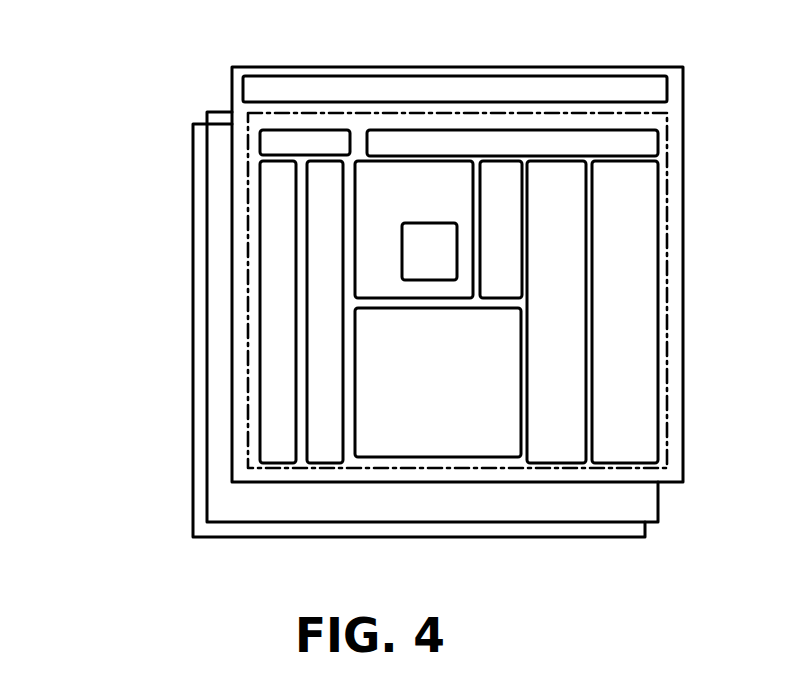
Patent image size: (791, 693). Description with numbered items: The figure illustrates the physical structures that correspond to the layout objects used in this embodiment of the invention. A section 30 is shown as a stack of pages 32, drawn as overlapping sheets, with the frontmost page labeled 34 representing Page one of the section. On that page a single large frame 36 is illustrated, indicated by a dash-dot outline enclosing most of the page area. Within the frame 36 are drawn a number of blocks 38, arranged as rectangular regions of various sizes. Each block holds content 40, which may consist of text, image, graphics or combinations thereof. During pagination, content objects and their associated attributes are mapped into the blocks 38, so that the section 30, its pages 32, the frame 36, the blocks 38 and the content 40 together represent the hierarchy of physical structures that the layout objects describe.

The section 30 is at (186, 511).
The pages 32 is at (232, 80).
The page 1 34 is at (232, 87).
The frame 36 is at (248, 136).
The blocks 38 is at (260, 214).
The content 40 is at (473, 432).